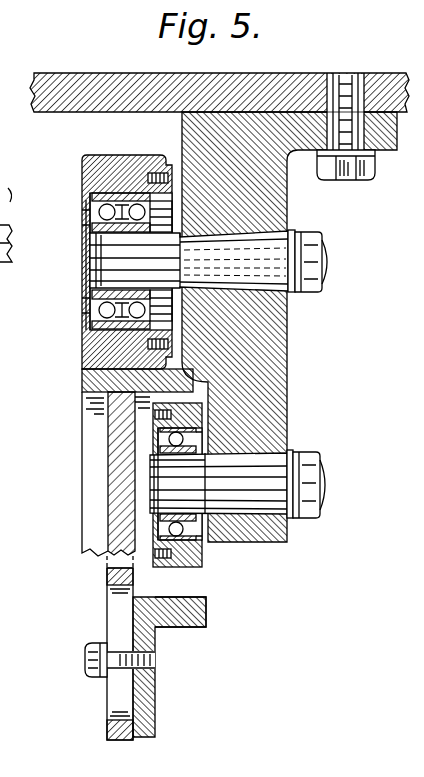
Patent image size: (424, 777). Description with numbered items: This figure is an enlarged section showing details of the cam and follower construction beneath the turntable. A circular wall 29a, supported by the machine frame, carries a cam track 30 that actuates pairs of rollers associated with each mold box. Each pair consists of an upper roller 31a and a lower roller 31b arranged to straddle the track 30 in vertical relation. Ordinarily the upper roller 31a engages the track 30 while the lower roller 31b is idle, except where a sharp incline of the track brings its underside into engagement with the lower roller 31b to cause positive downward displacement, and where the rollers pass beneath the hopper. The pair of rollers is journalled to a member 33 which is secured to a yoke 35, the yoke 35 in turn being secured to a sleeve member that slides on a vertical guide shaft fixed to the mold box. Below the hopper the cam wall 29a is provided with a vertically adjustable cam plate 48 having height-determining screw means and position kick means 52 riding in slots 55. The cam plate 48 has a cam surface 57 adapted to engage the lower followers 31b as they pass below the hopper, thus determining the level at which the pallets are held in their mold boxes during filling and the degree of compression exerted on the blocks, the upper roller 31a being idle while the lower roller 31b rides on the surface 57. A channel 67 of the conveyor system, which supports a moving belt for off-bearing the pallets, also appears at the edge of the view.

The yoke 35 is at (155, 82).
The member 33 is at (283, 376).
The roller 31a is at (97, 355).
The cam track 30 is at (84, 380).
The circular wall 29a is at (108, 482).
The roller 31b is at (200, 556).
The cam surface 57 is at (204, 598).
The position kick means 52 is at (87, 648).
The slot 55 is at (107, 695).
The cam plate 48 is at (155, 716).
The channel 67 is at (12, 243).